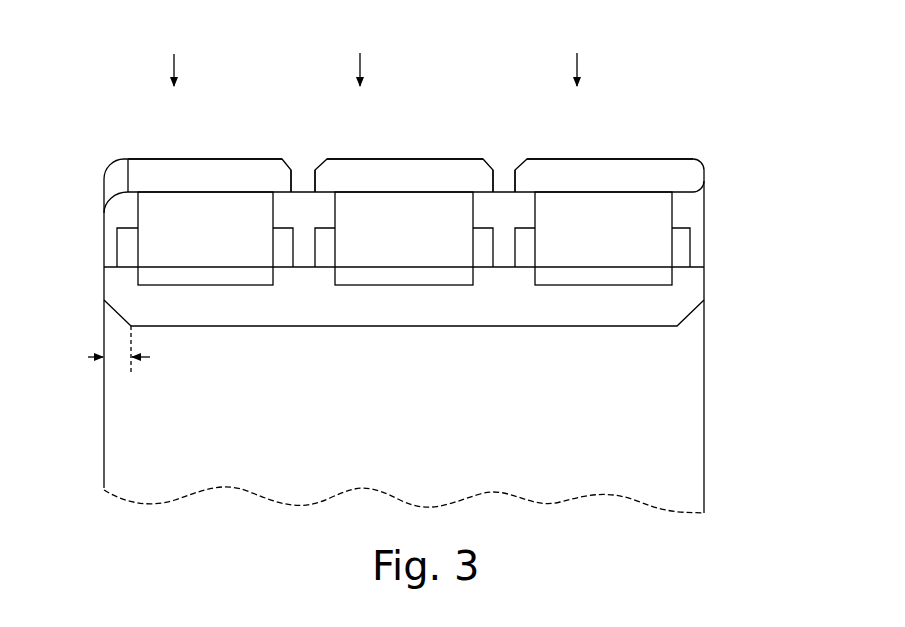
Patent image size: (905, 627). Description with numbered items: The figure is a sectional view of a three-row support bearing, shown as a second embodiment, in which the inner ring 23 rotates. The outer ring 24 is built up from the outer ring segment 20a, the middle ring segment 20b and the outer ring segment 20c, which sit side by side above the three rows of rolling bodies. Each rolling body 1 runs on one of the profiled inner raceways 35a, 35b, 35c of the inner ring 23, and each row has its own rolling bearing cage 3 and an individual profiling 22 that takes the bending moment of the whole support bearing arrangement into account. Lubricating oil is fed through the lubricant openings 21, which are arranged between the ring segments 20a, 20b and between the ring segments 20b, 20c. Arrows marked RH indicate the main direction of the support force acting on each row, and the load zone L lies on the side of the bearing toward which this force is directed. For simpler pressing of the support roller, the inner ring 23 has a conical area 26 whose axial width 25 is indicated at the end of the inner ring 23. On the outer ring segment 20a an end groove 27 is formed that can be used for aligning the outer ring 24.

The rolling body 1 is at (639, 211).
The rolling bearing cage 3 is at (124, 247).
The outer ring segment 20a is at (151, 177).
The middle ring segment 20b is at (427, 174).
The outer ring segment 20c is at (631, 174).
The lubricant opening 21 is at (302, 161).
The individual profiling 22 is at (196, 310).
The inner ring 23 is at (706, 285).
The outer ring 24 is at (706, 177).
The axial width of conical area 25 is at (90, 357).
The conical area 26 is at (103, 325).
The end groove 27 is at (84, 160).
The profiled inner raceway 35a is at (207, 196).
The profiled inner raceway 35b is at (407, 196).
The profiled inner raceway 35c is at (609, 196).
The load zone L is at (731, 248).
The main direction of support force RH is at (176, 68).